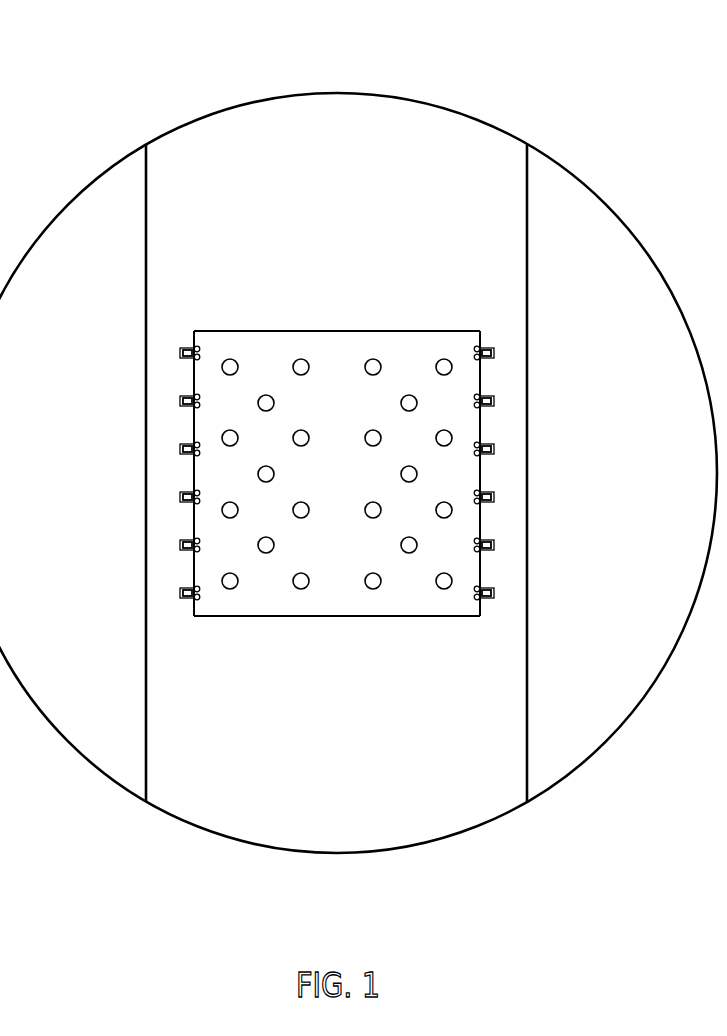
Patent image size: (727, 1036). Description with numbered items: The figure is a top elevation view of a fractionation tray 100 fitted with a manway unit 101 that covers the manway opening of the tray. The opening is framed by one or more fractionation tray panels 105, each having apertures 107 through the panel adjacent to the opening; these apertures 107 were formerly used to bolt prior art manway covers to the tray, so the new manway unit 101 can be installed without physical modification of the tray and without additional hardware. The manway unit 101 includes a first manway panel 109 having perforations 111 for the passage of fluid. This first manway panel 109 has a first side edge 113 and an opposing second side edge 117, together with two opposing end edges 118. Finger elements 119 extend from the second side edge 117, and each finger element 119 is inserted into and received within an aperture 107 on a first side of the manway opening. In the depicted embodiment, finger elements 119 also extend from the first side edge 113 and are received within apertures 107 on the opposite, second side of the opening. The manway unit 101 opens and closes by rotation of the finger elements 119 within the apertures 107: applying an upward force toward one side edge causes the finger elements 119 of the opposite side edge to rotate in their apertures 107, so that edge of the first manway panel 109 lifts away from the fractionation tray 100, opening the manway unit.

The fractionation tray 100 is at (361, 466).
The manway unit 101 is at (434, 473).
The fractionation tray panel 105 is at (358, 483).
The apertures 107 is at (181, 592).
The first manway panel 109 is at (346, 478).
The perforations 111 is at (423, 428).
The first side edge 113 is at (108, 473).
The second side edge 117 is at (575, 473).
The end edges 118 is at (281, 478).
The finger elements 119 is at (329, 396).